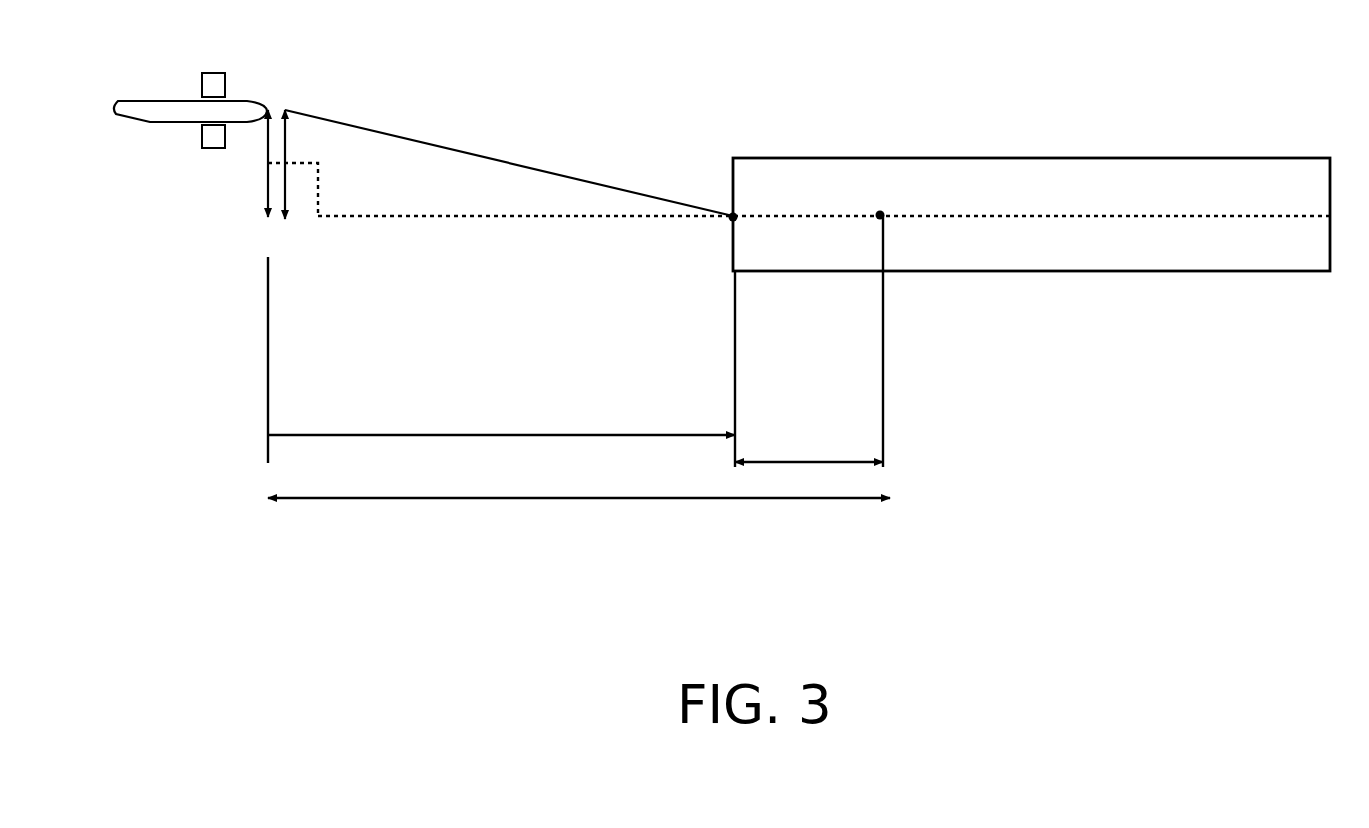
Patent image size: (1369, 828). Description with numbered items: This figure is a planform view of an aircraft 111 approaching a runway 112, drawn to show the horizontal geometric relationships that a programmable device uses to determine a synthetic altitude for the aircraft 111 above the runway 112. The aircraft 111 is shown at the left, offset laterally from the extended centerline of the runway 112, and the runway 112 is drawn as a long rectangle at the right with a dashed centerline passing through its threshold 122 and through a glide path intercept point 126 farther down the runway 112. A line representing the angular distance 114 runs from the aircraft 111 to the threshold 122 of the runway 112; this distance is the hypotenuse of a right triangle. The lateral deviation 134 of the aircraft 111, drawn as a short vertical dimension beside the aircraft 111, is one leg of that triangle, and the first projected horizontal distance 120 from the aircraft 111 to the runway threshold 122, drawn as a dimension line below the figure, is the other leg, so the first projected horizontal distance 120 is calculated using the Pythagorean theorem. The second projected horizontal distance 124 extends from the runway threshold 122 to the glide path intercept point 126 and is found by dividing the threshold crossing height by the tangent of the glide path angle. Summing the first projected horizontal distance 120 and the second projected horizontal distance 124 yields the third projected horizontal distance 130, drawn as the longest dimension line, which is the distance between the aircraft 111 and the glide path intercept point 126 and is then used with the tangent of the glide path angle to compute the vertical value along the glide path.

The aircraft 111 is at (168, 127).
The runway 112 is at (1005, 210).
The angular distance 114 is at (452, 143).
The first projected horizontal distance 120 is at (424, 430).
The threshold 122 is at (727, 226).
The second projected horizontal distance 124 is at (814, 456).
The glide path intercept point 126 is at (887, 221).
The third projected horizontal distance 130 is at (561, 502).
The lateral deviation 134 is at (275, 184).